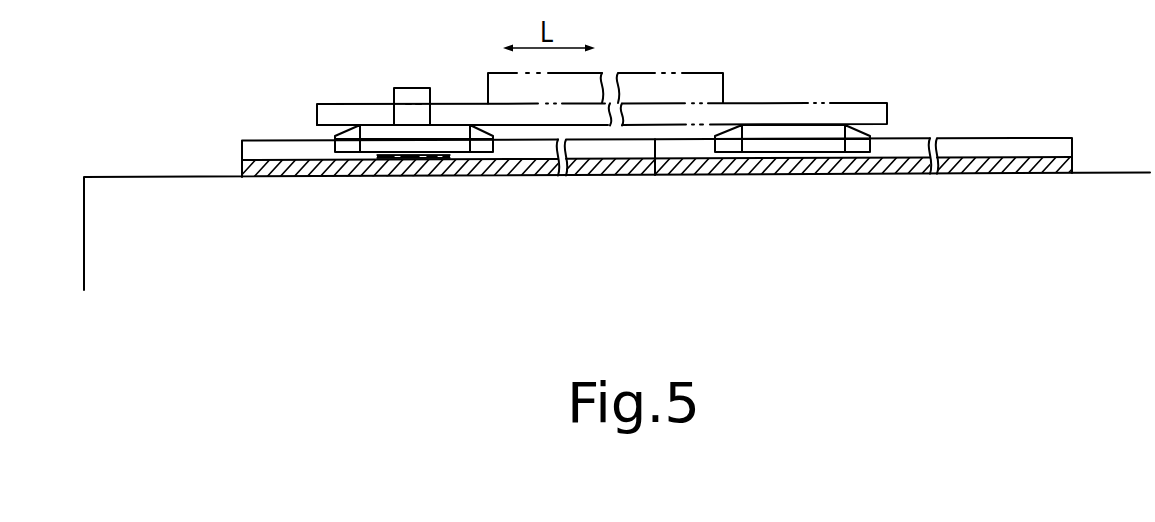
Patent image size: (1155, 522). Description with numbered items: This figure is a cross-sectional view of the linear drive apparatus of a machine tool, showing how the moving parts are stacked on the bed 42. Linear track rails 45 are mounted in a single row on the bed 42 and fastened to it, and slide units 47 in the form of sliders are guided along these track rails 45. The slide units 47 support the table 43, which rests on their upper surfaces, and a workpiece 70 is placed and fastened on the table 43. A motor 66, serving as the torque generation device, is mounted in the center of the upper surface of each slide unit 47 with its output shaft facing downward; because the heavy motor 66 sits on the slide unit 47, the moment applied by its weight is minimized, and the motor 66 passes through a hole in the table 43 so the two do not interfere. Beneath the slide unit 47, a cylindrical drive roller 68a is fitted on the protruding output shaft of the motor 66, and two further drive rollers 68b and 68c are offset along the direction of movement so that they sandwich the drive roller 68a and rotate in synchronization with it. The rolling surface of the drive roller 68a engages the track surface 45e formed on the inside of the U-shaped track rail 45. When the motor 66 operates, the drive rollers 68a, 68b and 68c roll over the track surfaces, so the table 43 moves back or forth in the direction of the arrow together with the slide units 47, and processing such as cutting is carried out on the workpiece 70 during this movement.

The bed 42 is at (138, 192).
The table 43 is at (778, 113).
The linear track rail 45 is at (258, 137).
The track surface 45e is at (292, 152).
The slide unit 47 is at (372, 120).
The motor 66 is at (421, 86).
The drive roller 68a is at (413, 176).
The drive roller 68b is at (392, 176).
The drive roller 68c is at (445, 176).
The workpiece 70 is at (680, 87).